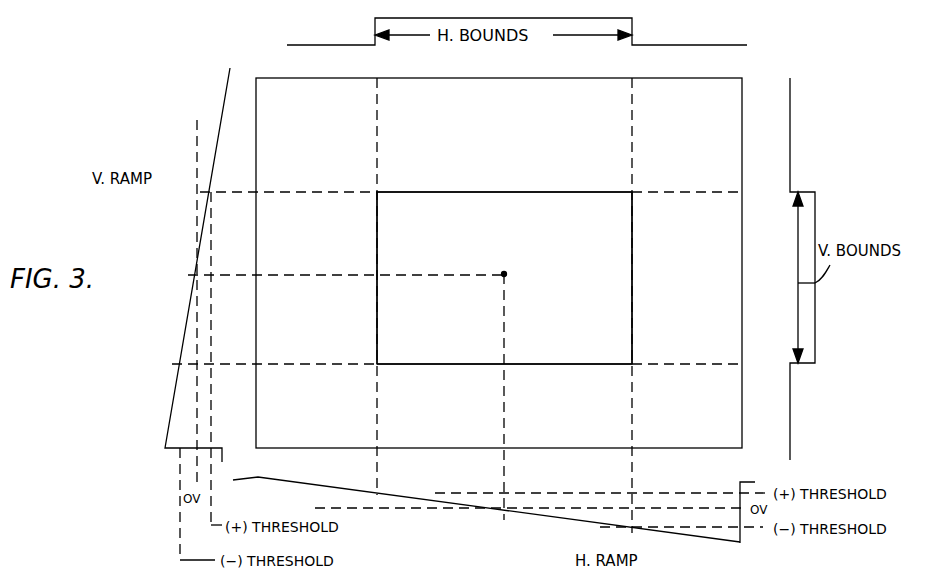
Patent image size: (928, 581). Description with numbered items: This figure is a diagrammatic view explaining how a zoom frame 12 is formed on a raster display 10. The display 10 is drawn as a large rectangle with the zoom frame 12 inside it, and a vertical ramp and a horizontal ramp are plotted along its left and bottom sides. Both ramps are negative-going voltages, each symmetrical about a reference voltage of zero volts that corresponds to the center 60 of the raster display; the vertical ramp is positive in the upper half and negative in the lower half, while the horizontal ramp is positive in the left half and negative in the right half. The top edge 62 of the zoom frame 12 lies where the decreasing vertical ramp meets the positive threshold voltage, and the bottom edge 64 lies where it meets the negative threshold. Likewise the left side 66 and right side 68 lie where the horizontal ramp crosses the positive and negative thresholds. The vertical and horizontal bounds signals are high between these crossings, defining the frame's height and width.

The display 10 is at (743, 99).
The zoom frame 12 is at (584, 193).
The center of the raster display 60 is at (504, 274).
The top edge of zoom frame 62 is at (487, 192).
The bottom edge of zoom frame 64 is at (530, 366).
The left side of zoom frame 66 is at (377, 312).
The right side of zoom frame 68 is at (632, 299).